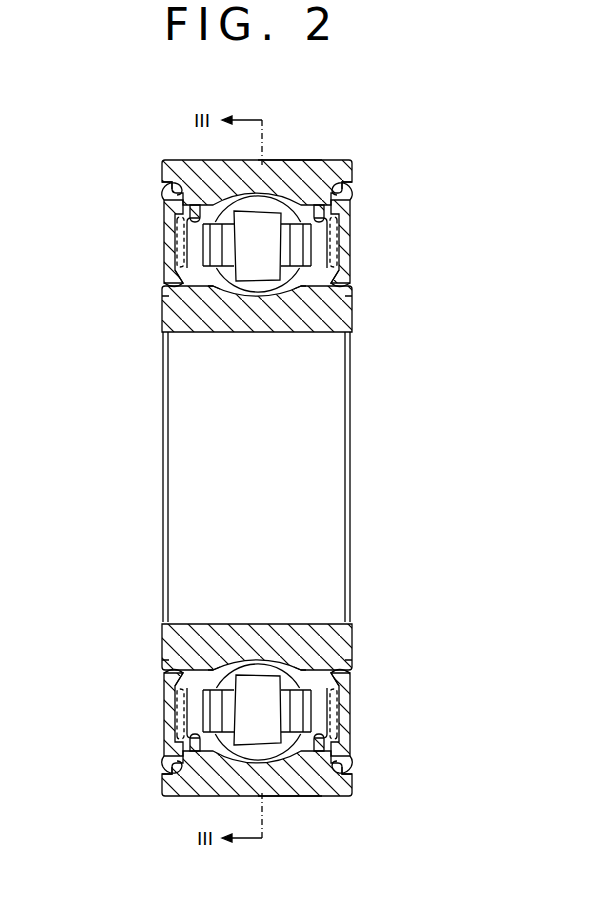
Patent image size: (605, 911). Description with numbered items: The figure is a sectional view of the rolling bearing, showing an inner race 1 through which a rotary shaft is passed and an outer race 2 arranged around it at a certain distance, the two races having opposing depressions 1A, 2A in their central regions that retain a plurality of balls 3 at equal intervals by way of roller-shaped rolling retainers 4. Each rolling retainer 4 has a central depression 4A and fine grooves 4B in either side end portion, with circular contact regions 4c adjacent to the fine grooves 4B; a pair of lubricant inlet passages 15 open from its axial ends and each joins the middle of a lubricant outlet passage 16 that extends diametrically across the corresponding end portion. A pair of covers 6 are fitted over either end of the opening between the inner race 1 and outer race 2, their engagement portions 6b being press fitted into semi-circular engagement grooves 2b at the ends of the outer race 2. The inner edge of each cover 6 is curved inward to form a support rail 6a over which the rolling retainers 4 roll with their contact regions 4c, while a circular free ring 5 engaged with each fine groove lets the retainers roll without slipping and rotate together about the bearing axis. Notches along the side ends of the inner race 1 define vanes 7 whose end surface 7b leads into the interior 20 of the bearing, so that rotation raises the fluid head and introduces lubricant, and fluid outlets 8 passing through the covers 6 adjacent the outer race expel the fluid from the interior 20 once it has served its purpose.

The inner race 1 is at (165, 330).
The depression 1A is at (258, 294).
The outer race 2 is at (347, 162).
The depression 2A is at (278, 160).
The engagement groove 2b is at (168, 180).
The ball 3 is at (305, 160).
The rolling retainer 4 is at (240, 246).
The depression 4A is at (265, 765).
The fine groove 4B is at (296, 290).
The contact region 4c is at (206, 262).
The free ring 5 is at (190, 208).
The cover 6 is at (165, 225).
The support rail 6a is at (172, 283).
The engagement portion 6b is at (170, 186).
The vane 7 is at (163, 290).
The end surface 7b is at (233, 297).
The fluid outlet 8 is at (325, 208).
The lubricant inlet passage 15 is at (186, 255).
The lubricant outlet passage 16 is at (176, 240).
The interior 20 is at (352, 300).